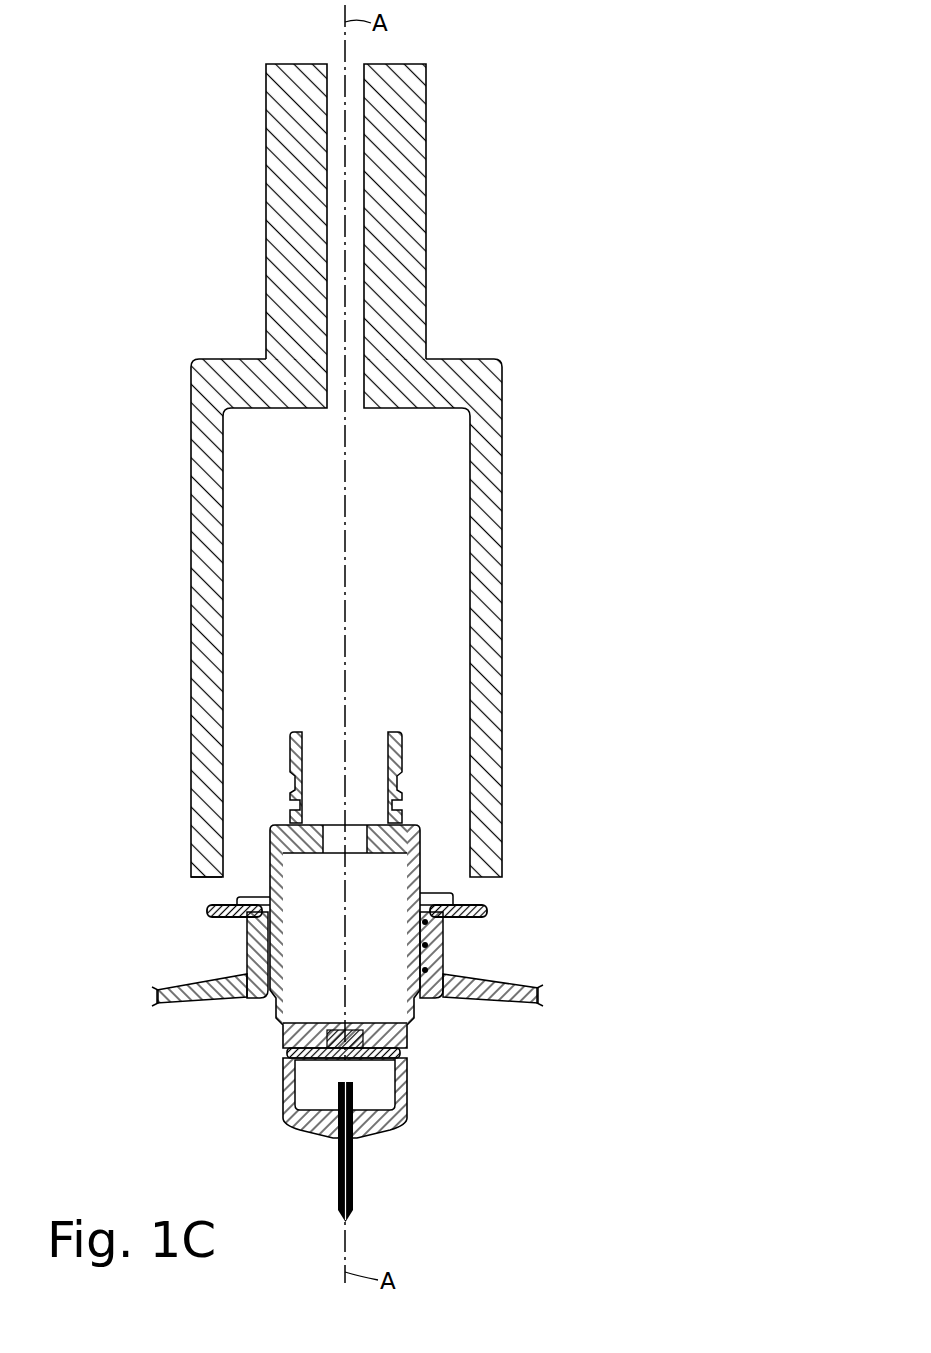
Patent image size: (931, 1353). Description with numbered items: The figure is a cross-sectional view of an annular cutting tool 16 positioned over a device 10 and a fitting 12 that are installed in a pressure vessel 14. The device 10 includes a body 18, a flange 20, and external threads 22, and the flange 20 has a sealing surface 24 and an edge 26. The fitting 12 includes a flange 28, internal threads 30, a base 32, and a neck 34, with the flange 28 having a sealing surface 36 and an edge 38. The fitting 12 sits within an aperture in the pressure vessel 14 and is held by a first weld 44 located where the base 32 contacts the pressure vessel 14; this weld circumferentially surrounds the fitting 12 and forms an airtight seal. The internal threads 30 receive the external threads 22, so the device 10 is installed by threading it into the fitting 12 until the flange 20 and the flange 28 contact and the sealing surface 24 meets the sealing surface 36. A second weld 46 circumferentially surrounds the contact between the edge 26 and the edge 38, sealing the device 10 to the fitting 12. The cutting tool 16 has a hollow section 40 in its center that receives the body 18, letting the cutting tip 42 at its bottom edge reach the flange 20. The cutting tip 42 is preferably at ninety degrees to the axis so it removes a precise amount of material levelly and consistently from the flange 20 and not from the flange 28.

The device 10 is at (410, 755).
The fitting 12 is at (513, 1010).
The pressure vessel 14 is at (165, 1016).
The annular cutting tool 16 is at (390, 193).
The body 18 is at (421, 858).
The flange 20 is at (470, 902).
The external threads 22 is at (424, 953).
The sealing surface 24 is at (518, 955).
The edge 26 is at (535, 894).
The flange 28 is at (226, 905).
The internal threads 30 is at (172, 1021).
The base 32 is at (172, 1025).
The neck 34 is at (248, 955).
The sealing surface 36 is at (210, 907).
The edge 38 is at (167, 955).
The hollow section 40 is at (424, 495).
The cutting tip 42 is at (209, 880).
The first weld 44 is at (507, 1003).
The second weld 46 is at (487, 913).